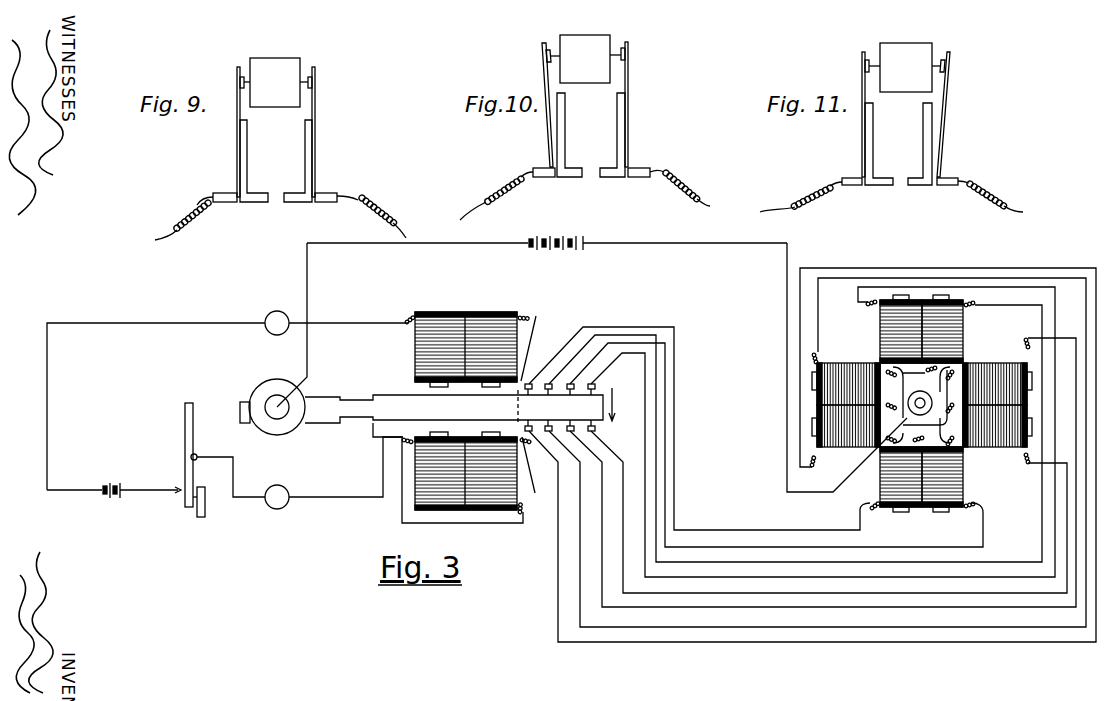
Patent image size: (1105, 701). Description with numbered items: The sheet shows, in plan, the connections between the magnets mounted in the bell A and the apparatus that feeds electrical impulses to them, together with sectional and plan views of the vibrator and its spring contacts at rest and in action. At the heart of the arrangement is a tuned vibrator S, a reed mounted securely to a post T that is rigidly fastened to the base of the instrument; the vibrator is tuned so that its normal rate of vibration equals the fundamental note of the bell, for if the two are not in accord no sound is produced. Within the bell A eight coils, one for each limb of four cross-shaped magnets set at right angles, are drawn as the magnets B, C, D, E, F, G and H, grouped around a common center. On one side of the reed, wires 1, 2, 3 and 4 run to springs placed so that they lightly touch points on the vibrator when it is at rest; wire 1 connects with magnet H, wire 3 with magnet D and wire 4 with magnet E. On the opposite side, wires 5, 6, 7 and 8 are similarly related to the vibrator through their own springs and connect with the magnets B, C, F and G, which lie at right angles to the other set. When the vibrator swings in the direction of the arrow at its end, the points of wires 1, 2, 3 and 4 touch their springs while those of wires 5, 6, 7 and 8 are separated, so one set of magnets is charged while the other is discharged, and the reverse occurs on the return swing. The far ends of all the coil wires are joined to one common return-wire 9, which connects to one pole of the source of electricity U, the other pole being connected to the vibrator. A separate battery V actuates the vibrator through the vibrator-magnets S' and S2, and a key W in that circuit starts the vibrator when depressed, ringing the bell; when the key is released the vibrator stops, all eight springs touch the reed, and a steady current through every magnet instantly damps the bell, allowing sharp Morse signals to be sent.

The tuned vibrator S is at (460, 406).
The vibrator-magnet S' is at (412, 336).
The vibrator-magnet S2 is at (493, 492).
The post T is at (283, 430).
The key W is at (238, 460).
The battery V is at (168, 419).
The source of electricity U is at (547, 250).
The common return-wire 9 is at (804, 356).
The wire 1 is at (810, 455).
The wire 2 is at (815, 452).
The wire 3 is at (821, 472).
The wire 4 is at (827, 506).
The wire 5 is at (703, 428).
The wire 6 is at (793, 431).
The wire 7 is at (775, 445).
The wire 8 is at (821, 432).
The bell A is at (848, 348).
The magnet B is at (880, 337).
The magnet C is at (950, 329).
The magnet D is at (997, 374).
The magnet E is at (997, 436).
The magnet F is at (950, 479).
The magnet G is at (890, 479).
The magnet H is at (846, 436).